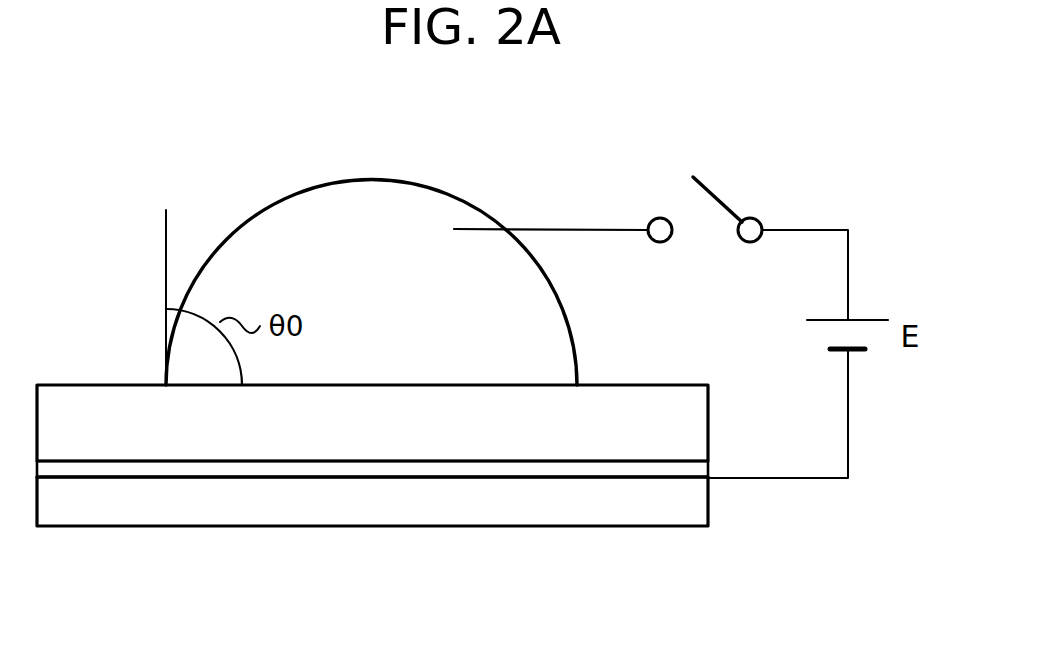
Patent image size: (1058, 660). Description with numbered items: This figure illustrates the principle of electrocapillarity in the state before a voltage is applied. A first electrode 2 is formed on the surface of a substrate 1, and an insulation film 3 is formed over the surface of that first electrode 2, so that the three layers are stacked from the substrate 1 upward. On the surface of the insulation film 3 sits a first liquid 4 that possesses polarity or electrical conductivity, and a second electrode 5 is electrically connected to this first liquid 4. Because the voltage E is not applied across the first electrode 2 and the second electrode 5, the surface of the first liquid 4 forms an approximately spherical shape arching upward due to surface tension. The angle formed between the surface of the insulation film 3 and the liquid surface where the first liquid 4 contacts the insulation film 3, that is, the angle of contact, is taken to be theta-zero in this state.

The substrate 1 is at (475, 507).
The first electrode 2 is at (608, 473).
The insulation film 3 is at (693, 418).
The first liquid 4 is at (354, 188).
The second electrode 5 is at (536, 228).